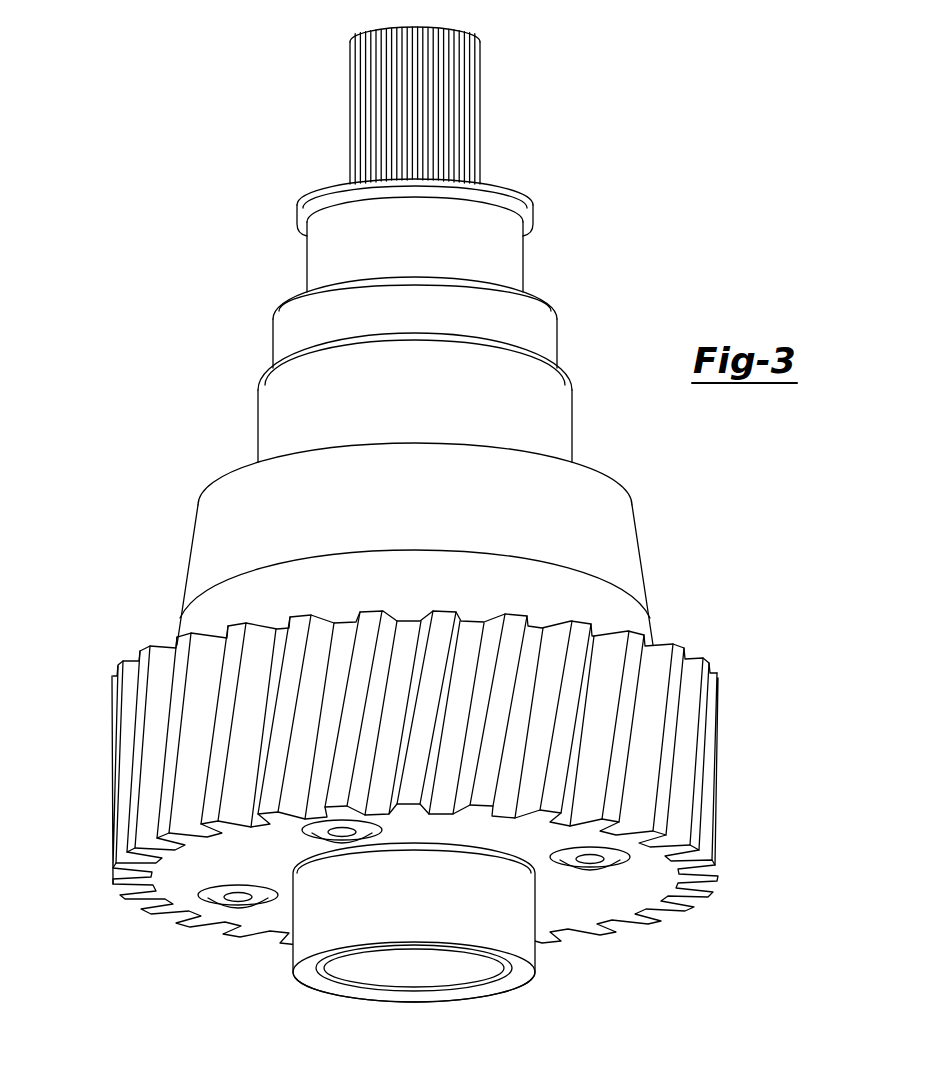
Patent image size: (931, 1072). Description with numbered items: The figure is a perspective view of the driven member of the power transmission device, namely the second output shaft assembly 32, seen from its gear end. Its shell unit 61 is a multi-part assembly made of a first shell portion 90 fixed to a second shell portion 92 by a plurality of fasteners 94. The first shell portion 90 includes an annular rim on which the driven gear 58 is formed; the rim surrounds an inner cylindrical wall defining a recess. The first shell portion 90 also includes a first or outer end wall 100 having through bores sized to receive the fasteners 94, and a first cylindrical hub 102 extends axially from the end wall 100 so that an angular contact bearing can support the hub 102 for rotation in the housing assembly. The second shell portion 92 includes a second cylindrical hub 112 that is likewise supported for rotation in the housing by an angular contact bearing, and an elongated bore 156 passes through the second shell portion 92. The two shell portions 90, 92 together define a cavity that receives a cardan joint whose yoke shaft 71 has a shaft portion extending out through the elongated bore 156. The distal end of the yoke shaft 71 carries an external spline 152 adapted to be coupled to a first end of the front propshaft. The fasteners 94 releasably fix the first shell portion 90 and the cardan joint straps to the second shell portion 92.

The second output shaft assembly 32 is at (588, 122).
The external spline 152 is at (472, 60).
The yoke shaft 71 is at (468, 94).
The elongated bore 156 is at (325, 186).
The second cylindrical hub 112 is at (277, 433).
The second shell portion 92 is at (646, 488).
The shell unit 61 is at (711, 633).
The first shell portion 90 is at (745, 755).
The driven gear 58 is at (115, 735).
The first or outer end wall 100 is at (268, 935).
The fasteners 94 is at (342, 841).
The first cylindrical hub 102 is at (515, 944).